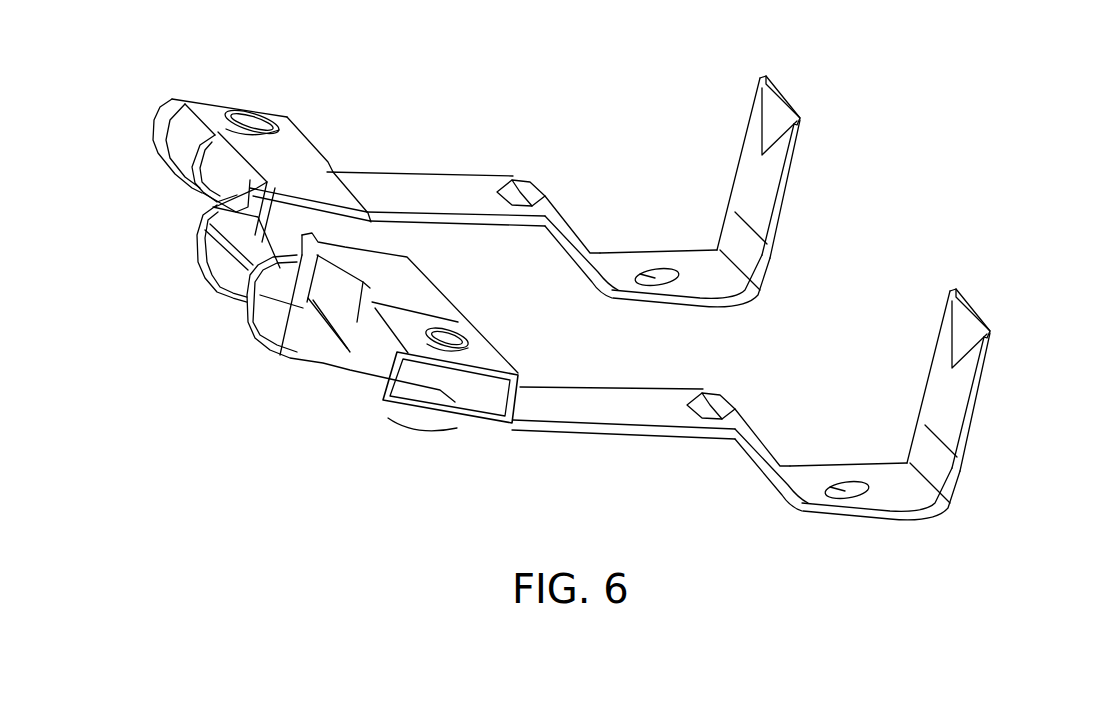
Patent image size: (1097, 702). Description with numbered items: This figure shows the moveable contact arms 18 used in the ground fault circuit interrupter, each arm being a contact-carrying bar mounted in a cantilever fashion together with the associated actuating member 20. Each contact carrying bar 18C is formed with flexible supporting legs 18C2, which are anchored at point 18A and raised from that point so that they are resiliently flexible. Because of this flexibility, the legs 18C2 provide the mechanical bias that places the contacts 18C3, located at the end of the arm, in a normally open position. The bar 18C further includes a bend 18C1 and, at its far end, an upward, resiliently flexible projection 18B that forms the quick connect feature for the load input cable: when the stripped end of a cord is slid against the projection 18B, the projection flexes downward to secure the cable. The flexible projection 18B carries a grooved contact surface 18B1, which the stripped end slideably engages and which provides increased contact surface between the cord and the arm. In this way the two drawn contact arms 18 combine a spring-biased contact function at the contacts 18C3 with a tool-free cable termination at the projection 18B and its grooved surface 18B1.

The moveable contact arms 18 is at (260, 393).
The actuating member 20 is at (290, 162).
The anchor point 18A is at (636, 250).
The flexible projection 18B is at (781, 86).
The grooved contact surface 18B1 is at (798, 119).
The contact carrying bar 18C is at (711, 324).
The bend 18C1 is at (536, 187).
The flexible supporting legs 18C2 is at (433, 172).
The contacts 18C3 is at (412, 422).